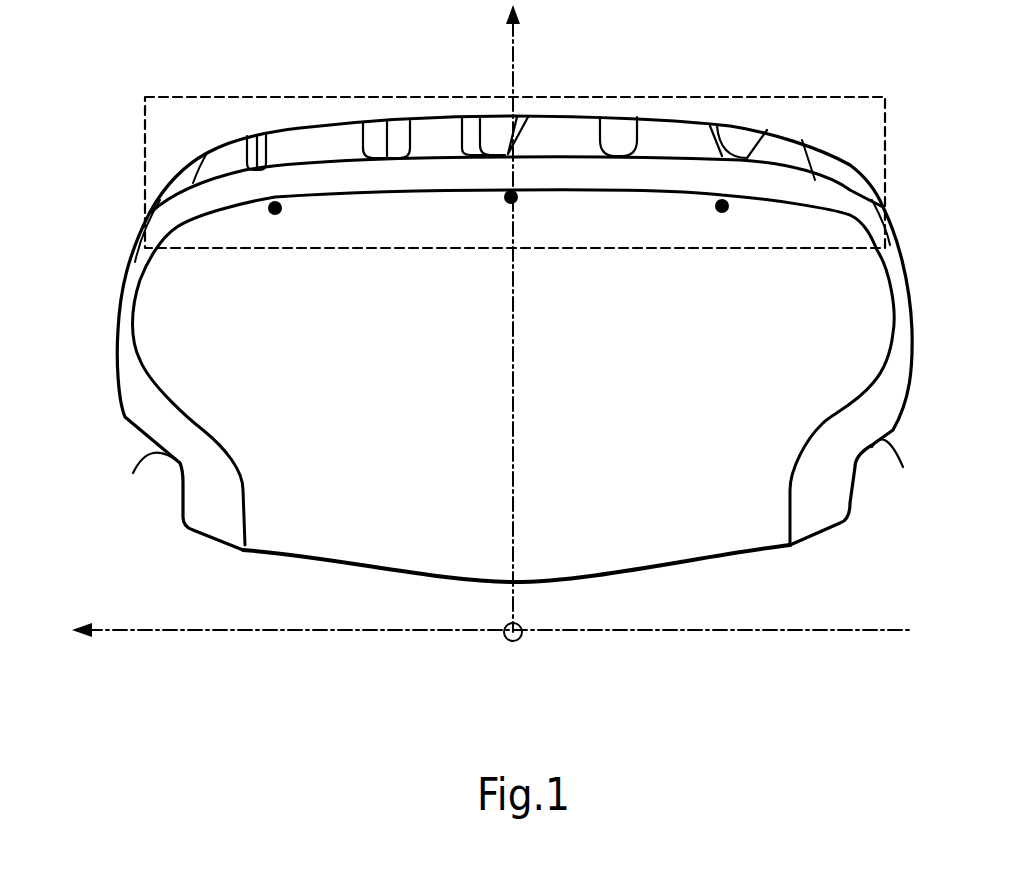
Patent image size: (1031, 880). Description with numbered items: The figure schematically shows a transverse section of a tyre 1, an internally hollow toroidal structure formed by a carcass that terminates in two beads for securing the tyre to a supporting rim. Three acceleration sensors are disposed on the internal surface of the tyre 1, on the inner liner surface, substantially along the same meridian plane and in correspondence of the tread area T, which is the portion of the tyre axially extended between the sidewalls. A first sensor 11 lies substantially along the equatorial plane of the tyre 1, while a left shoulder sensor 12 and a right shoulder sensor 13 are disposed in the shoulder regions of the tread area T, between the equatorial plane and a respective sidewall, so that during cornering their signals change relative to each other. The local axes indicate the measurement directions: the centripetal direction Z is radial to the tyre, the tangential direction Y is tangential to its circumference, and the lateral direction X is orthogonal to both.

The tyre 1 is at (110, 312).
The first sensor 11 is at (509, 193).
The left shoulder sensor 12 is at (274, 202).
The right shoulder sensor 13 is at (723, 200).
The tread area T is at (888, 160).
The lateral direction x X is at (524, 622).
The tangential direction y Y is at (491, 616).
The centripetal direction z Z is at (515, 33).